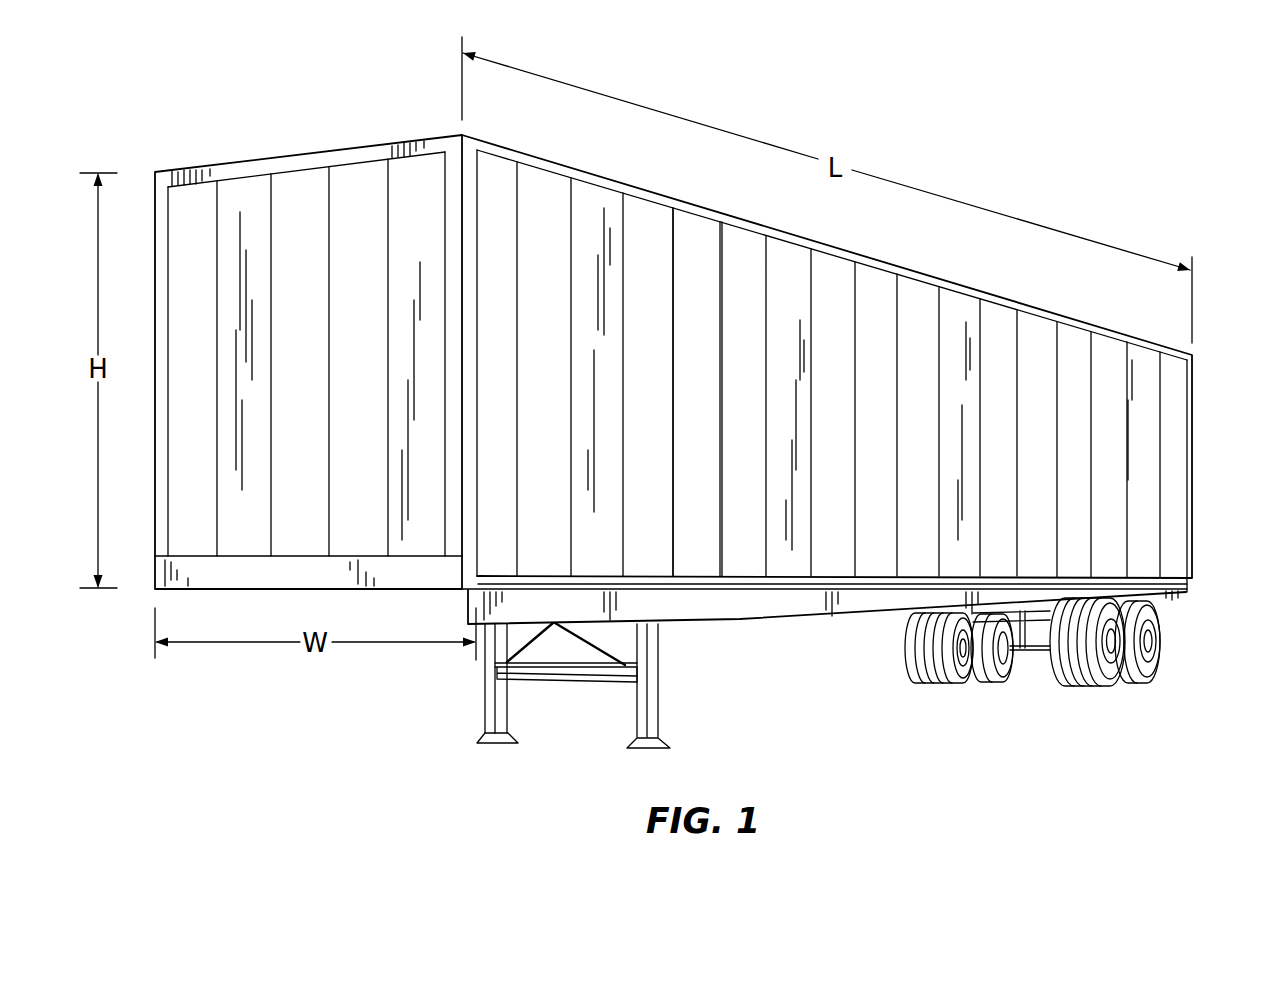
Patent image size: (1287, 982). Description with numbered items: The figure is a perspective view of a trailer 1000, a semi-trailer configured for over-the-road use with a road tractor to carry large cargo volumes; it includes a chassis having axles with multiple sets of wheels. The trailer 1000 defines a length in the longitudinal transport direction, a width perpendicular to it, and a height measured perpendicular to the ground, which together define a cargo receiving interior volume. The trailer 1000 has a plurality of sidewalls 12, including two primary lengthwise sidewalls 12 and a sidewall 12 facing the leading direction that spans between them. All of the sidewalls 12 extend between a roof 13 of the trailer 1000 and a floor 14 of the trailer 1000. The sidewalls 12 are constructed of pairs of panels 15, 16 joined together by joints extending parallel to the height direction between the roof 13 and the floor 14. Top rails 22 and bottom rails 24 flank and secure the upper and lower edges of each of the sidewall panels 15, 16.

The trailer 1000 is at (1035, 146).
The sidewall 12 is at (880, 308).
The roof 13 is at (385, 136).
The floor 14 is at (750, 630).
The panel 15 is at (640, 517).
The panel 16 is at (686, 517).
The top rail 22 is at (260, 167).
The bottom rail 24 is at (800, 584).